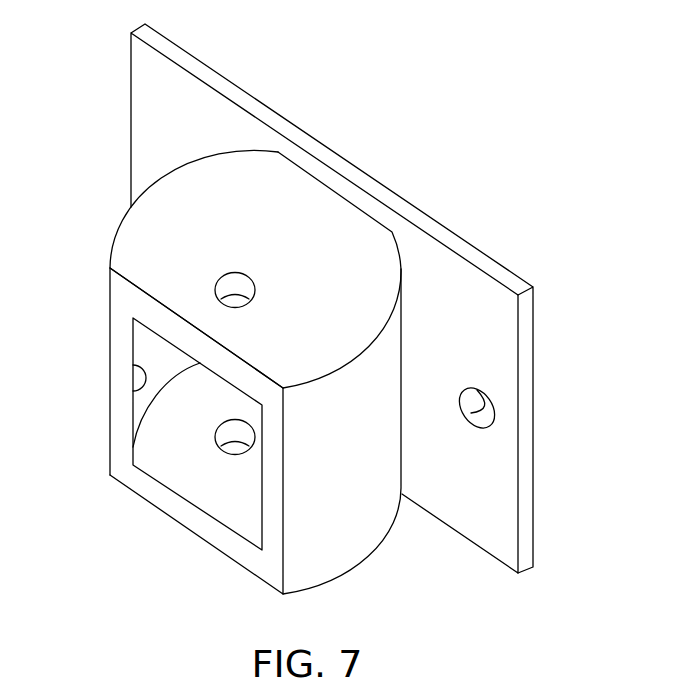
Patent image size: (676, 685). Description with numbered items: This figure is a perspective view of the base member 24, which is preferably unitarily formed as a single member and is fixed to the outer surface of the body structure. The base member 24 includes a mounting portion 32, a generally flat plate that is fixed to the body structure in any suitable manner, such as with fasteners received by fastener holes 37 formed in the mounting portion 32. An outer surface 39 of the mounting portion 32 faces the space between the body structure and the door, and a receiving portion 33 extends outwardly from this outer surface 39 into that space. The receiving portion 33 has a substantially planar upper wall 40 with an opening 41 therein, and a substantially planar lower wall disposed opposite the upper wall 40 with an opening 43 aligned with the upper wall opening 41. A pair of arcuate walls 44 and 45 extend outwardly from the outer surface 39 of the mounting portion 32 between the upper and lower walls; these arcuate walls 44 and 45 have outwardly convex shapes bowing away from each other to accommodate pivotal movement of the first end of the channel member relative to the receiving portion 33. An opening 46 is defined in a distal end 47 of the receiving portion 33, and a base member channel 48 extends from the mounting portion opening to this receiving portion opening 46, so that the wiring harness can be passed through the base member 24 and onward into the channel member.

The base member 24 is at (373, 298).
The mounting portion 32 is at (243, 88).
The receiving portion 33 is at (223, 357).
The fastener holes 37 is at (470, 413).
The outer surface 39 is at (465, 323).
The upper wall 40 is at (218, 208).
The opening 41 is at (247, 270).
The opening 43 is at (215, 440).
The arcuate wall 44 is at (348, 515).
The arcuate wall 45 is at (120, 224).
The opening 46 is at (137, 392).
The distal end 47 is at (180, 318).
The base member channel 48 is at (180, 458).